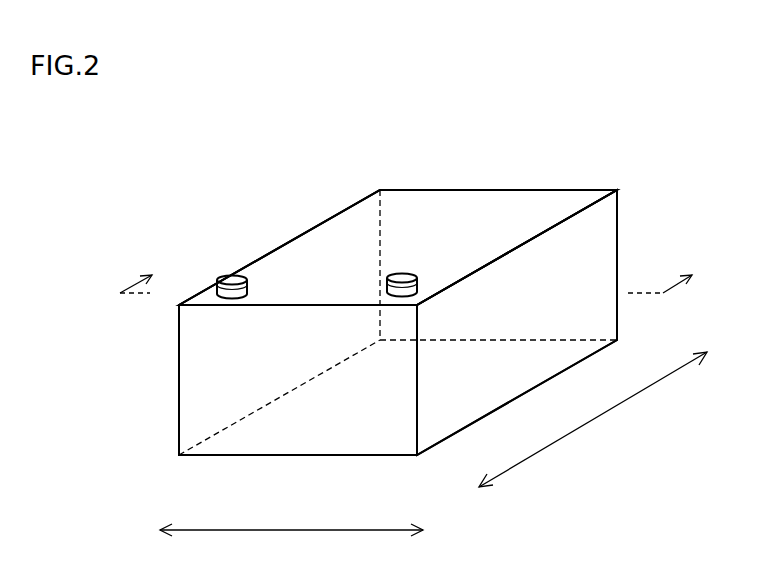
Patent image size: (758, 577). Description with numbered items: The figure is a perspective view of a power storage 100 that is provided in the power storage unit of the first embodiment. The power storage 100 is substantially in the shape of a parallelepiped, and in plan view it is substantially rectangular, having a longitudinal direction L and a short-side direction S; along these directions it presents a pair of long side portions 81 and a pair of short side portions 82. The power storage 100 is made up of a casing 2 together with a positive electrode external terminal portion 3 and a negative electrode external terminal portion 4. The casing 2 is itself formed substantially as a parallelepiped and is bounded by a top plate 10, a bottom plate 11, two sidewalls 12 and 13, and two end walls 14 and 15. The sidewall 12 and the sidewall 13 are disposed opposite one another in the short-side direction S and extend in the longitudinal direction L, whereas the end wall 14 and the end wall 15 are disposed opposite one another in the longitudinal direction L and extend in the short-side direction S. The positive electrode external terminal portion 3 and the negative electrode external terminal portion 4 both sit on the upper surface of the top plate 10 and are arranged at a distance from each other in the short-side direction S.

The power storage 100 is at (290, 165).
The top plate 10 is at (551, 200).
The end wall 15 is at (432, 218).
The sidewall 12 is at (193, 365).
The sidewall 13 is at (430, 427).
The end wall 14 is at (240, 455).
The casing 2 is at (290, 455).
The bottom plate 11 is at (350, 455).
The long side portion 81 is at (308, 231).
The short side portion 82 is at (265, 307).
The positive electrode external terminal portion 3 is at (232, 276).
The negative electrode external terminal portion 4 is at (401, 273).